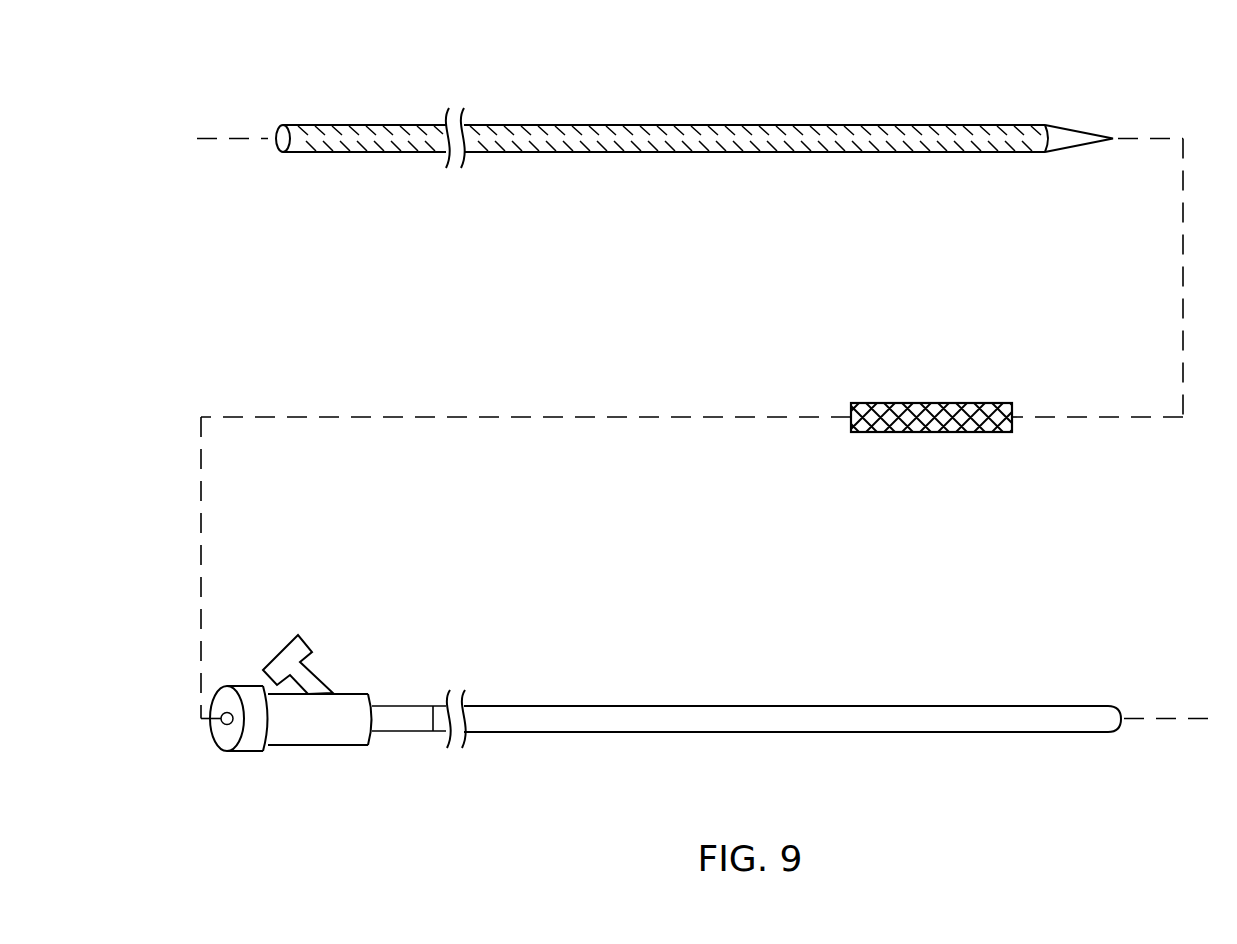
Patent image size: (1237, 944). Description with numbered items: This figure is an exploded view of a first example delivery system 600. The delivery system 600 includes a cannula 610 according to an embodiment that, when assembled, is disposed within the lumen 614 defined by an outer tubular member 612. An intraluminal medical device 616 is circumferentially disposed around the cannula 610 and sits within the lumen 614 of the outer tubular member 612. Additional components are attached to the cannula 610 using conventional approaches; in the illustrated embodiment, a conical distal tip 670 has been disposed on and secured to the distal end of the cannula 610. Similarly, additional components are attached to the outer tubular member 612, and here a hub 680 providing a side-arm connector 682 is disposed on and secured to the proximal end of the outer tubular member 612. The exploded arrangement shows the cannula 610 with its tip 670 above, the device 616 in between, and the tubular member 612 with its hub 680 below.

The delivery system 600 is at (334, 376).
The cannula 610 is at (627, 153).
The conical distal tip 670 is at (1063, 138).
The intraluminal medical device 616 is at (932, 402).
The outer tubular member 612 is at (568, 717).
The lumen 614 is at (1121, 710).
The hub 680 is at (302, 727).
The side-arm connector 682 is at (310, 668).